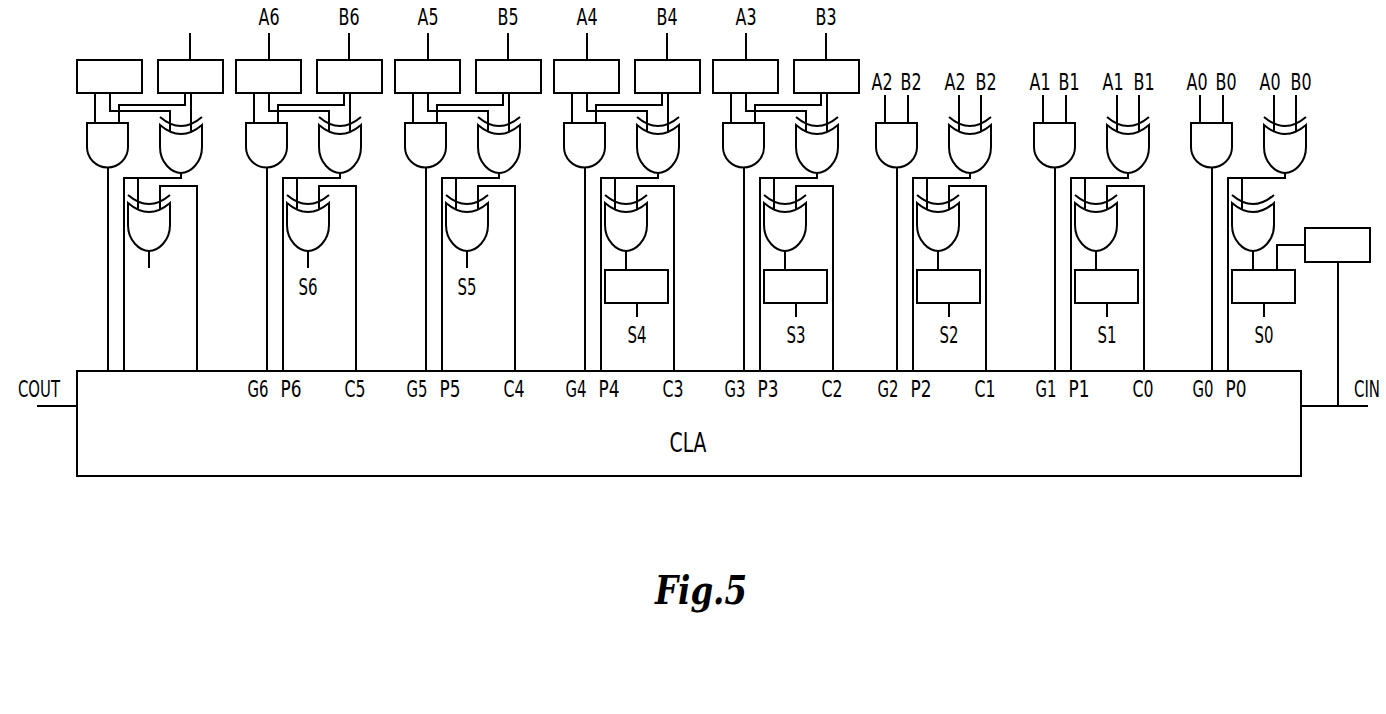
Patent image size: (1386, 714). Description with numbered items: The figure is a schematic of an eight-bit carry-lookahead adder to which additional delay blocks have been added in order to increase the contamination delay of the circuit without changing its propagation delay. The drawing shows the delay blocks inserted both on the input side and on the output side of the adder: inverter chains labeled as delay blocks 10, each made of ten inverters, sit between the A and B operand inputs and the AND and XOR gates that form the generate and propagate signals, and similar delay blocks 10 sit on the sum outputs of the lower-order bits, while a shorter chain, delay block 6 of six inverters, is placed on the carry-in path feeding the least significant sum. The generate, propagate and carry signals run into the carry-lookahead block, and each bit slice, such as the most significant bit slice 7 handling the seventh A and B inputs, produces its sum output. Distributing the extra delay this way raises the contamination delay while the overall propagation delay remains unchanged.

The inverter 10 is at (686, 181).
The inverter 6 is at (1323, 317).
The bit-7 adder cell (inputs A7, B7) 7 is at (110, 60).